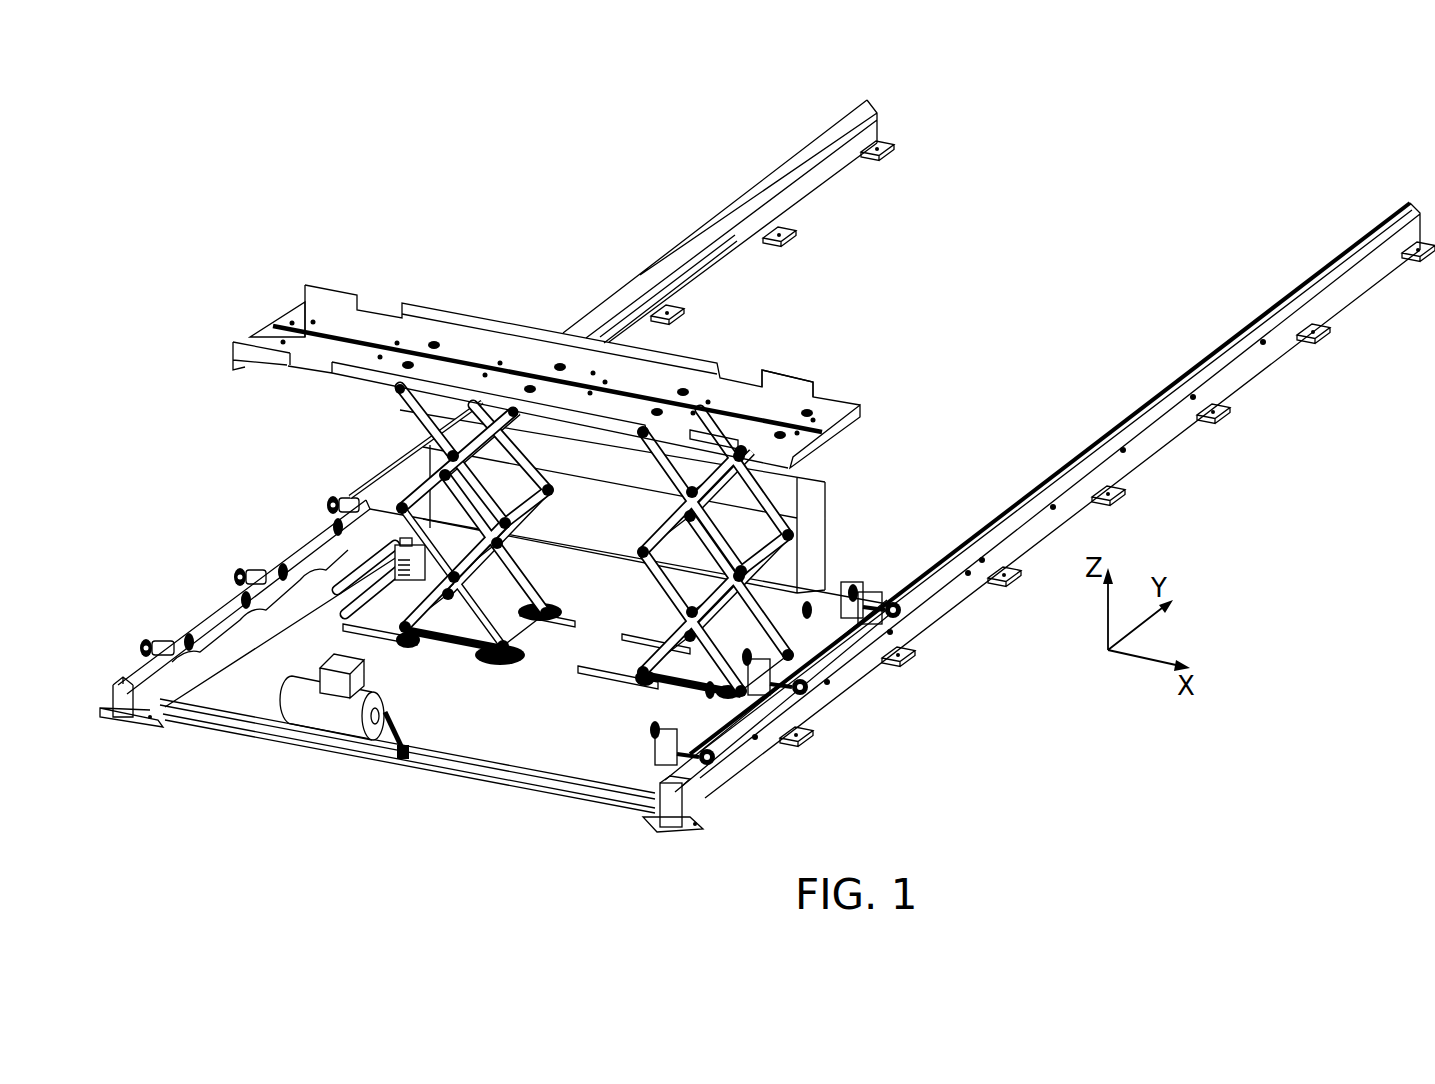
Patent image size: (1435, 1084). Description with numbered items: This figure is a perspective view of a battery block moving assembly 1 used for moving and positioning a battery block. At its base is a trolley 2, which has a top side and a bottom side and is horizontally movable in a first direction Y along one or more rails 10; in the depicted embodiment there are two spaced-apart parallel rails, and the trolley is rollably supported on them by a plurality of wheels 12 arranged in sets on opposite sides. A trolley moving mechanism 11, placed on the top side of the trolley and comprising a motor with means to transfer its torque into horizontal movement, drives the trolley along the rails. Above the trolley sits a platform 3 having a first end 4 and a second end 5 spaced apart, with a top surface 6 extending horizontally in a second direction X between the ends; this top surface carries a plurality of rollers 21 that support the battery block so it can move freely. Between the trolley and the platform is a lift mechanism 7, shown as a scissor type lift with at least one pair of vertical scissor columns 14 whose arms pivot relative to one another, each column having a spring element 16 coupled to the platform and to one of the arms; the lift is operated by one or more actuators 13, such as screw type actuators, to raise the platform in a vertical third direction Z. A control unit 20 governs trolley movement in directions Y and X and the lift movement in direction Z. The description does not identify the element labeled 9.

The battery block moving assembly 1 is at (1070, 180).
The trolley 2 is at (255, 690).
The platform 3 is at (468, 323).
The first end 4 is at (843, 410).
The second end 5 is at (257, 333).
The top surface 6 is at (732, 393).
The lift mechanism 7 is at (423, 487).
The corner bracket 9 is at (303, 310).
The rails 10 is at (667, 257).
The trolley moving mechanism 11 is at (305, 710).
The wheels 12 is at (890, 613).
The actuators 13 is at (350, 497).
The scissor columns 14 is at (790, 512).
The spring element 16 is at (462, 637).
The control unit 20 is at (800, 487).
The rollers 21 is at (410, 358).